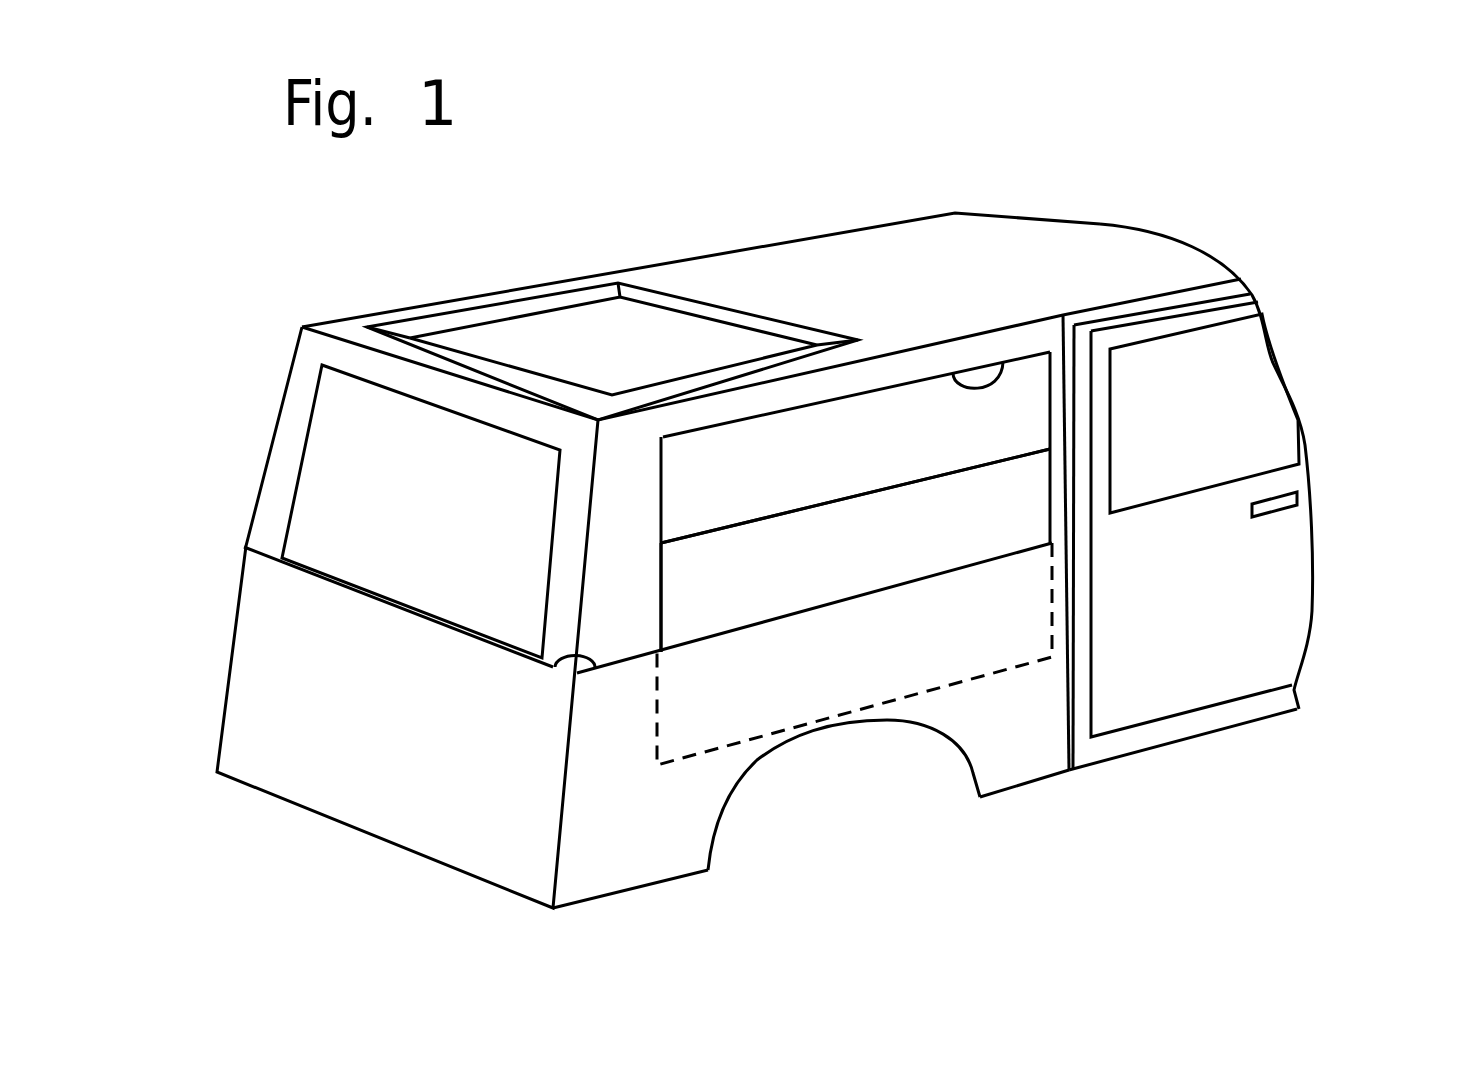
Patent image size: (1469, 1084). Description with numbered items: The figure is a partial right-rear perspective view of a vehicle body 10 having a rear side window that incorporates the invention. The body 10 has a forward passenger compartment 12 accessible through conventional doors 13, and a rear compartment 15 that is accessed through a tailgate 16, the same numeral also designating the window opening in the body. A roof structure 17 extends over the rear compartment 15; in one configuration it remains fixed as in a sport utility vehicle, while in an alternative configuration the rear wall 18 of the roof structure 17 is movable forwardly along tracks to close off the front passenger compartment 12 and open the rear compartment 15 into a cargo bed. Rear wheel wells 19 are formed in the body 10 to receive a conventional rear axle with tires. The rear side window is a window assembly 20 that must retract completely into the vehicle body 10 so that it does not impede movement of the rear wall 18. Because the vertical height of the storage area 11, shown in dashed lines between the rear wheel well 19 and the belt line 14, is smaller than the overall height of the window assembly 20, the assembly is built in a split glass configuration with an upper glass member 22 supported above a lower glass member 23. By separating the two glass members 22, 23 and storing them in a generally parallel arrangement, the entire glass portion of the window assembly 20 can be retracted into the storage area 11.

The vehicle body 10 is at (1008, 163).
The storage area 11 is at (708, 753).
The forward passenger compartment 12 is at (1322, 402).
The doors 13 is at (1283, 597).
The belt line 14 is at (560, 663).
The rear compartment 15 is at (490, 280).
The tailgate 16 is at (1003, 377).
The roof structure 17 is at (697, 280).
The rear wall 18 is at (283, 452).
The rear wheel wells 19 is at (973, 776).
The window assembly 20 is at (620, 690).
The upper glass member 22 is at (670, 482).
The lower glass member 23 is at (663, 602).